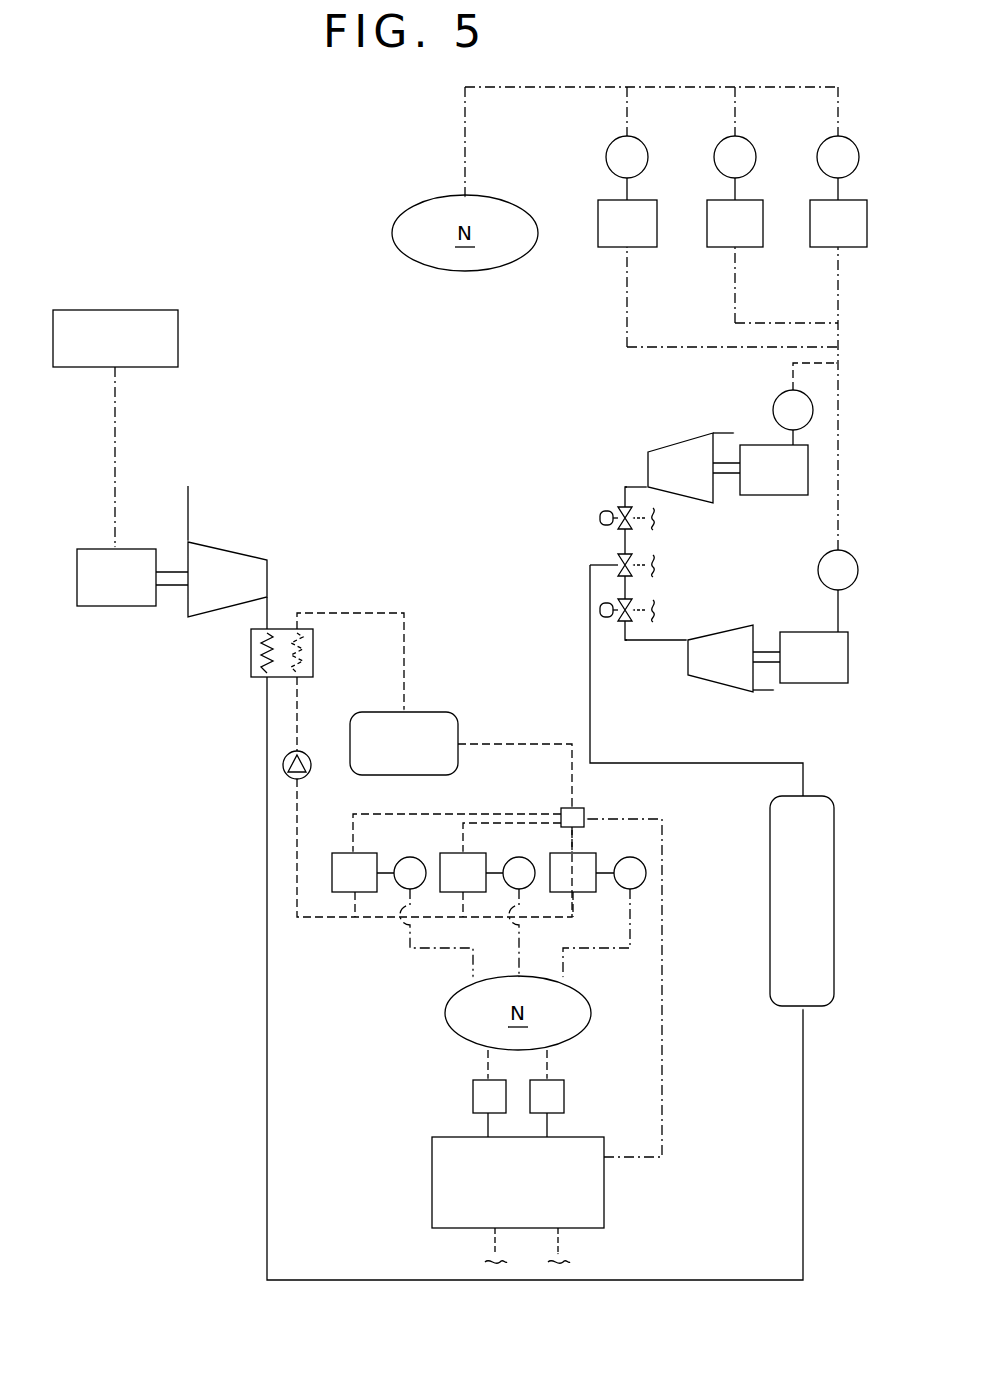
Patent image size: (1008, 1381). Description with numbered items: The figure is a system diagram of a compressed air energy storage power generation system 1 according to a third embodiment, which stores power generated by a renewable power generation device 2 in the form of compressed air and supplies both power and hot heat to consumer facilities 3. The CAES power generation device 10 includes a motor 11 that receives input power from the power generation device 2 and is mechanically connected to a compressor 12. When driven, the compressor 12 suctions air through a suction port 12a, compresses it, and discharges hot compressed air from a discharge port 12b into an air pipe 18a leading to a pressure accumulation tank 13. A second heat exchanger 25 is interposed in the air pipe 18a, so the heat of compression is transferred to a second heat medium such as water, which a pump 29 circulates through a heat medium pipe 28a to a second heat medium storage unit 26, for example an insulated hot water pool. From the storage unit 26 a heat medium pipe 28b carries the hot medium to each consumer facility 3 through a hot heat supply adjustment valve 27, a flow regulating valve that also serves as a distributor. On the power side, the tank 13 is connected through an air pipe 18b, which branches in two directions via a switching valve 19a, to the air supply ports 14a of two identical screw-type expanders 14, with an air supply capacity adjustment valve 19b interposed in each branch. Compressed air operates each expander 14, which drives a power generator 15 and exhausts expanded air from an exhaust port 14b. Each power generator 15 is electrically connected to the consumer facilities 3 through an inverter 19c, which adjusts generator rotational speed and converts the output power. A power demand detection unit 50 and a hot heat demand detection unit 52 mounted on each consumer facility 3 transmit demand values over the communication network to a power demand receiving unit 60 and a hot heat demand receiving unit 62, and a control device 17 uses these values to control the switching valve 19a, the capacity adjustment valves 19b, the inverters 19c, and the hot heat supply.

The compressed air energy storage power generation system 1 is at (238, 198).
The power generation device 2 is at (115, 310).
The consumer facility 3 is at (610, 247).
The CAES power generation device 10 is at (228, 927).
The motor 11 is at (111, 606).
The compressor 12 is at (267, 560).
The suction port 12a is at (191, 540).
The discharge port 12b is at (268, 600).
The pressure accumulation tank 13 is at (769, 835).
The expander 14 is at (647, 456).
The air supply port 14a is at (645, 485).
The exhaust port 14b is at (712, 436).
The power generator 15 is at (772, 495).
The control device 17 is at (596, 1203).
The air pipe 18a is at (266, 1007).
The air pipe 18b is at (621, 493).
The switching valve 19a is at (615, 563).
The air supply capacity adjustment valve 19b is at (600, 520).
The inverter 19c is at (776, 398).
The second heat exchanger 25 is at (313, 648).
The second heat medium storage unit 26 is at (455, 713).
The hot heat supply adjustment valve 27 is at (584, 812).
The heat medium pipe 28a is at (404, 625).
The heat medium pipe 28b is at (510, 744).
The pump 29 is at (307, 775).
The power demand detection unit 50 is at (606, 150).
The hot heat demand detection unit 52 is at (408, 857).
The power demand receiving unit 60 is at (564, 1096).
The hot heat demand receiving unit 62 is at (473, 1096).